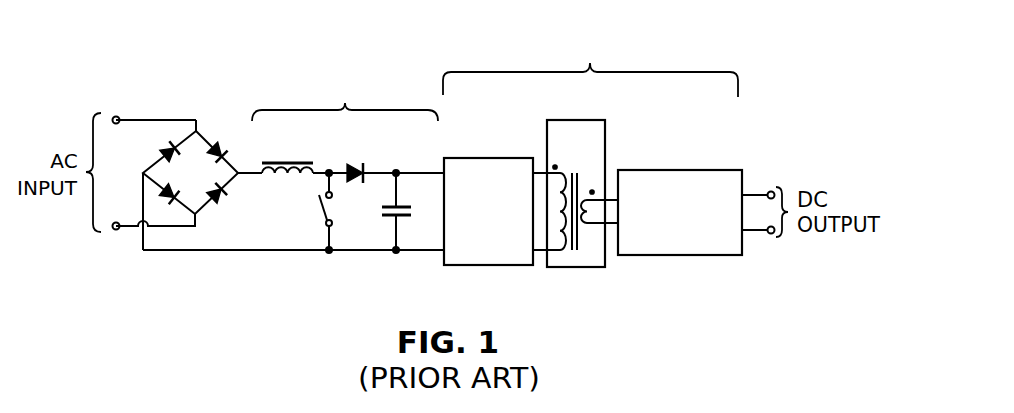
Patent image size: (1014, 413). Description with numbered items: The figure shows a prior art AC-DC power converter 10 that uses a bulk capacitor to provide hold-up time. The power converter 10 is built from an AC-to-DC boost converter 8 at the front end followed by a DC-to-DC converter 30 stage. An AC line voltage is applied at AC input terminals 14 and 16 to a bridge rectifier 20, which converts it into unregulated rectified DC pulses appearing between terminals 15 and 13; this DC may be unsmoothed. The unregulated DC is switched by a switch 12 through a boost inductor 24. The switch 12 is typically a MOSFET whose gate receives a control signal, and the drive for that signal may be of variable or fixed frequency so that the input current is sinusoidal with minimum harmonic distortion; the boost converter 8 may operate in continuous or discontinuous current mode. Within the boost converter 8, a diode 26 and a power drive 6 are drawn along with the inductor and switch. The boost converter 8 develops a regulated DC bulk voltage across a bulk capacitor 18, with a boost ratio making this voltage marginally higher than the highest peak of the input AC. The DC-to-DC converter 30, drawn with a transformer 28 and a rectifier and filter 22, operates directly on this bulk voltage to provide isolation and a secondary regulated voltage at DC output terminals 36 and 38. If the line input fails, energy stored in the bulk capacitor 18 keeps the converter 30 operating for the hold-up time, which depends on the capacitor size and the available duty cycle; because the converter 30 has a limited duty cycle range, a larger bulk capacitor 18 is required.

The AC-DC power converter 10 is at (305, 55).
The AC input terminal 14 is at (118, 114).
The AC input terminal 16 is at (116, 232).
The terminal 13 is at (158, 168).
The bridge rectifier 20 is at (206, 138).
The terminal 15 is at (238, 178).
The AC-to-DC boost converter 8 is at (345, 98).
The boost inductor 24 is at (296, 161).
The switch 12 is at (322, 211).
The diode 26 is at (367, 167).
The bulk capacitor 18 is at (386, 219).
The power drive 6 is at (497, 158).
The DC-to-DC converter 30 is at (590, 66).
The transformer 28 is at (585, 119).
The rectifier and filter 22 is at (662, 170).
The DC output terminal 36 is at (770, 190).
The DC output terminal 38 is at (770, 236).